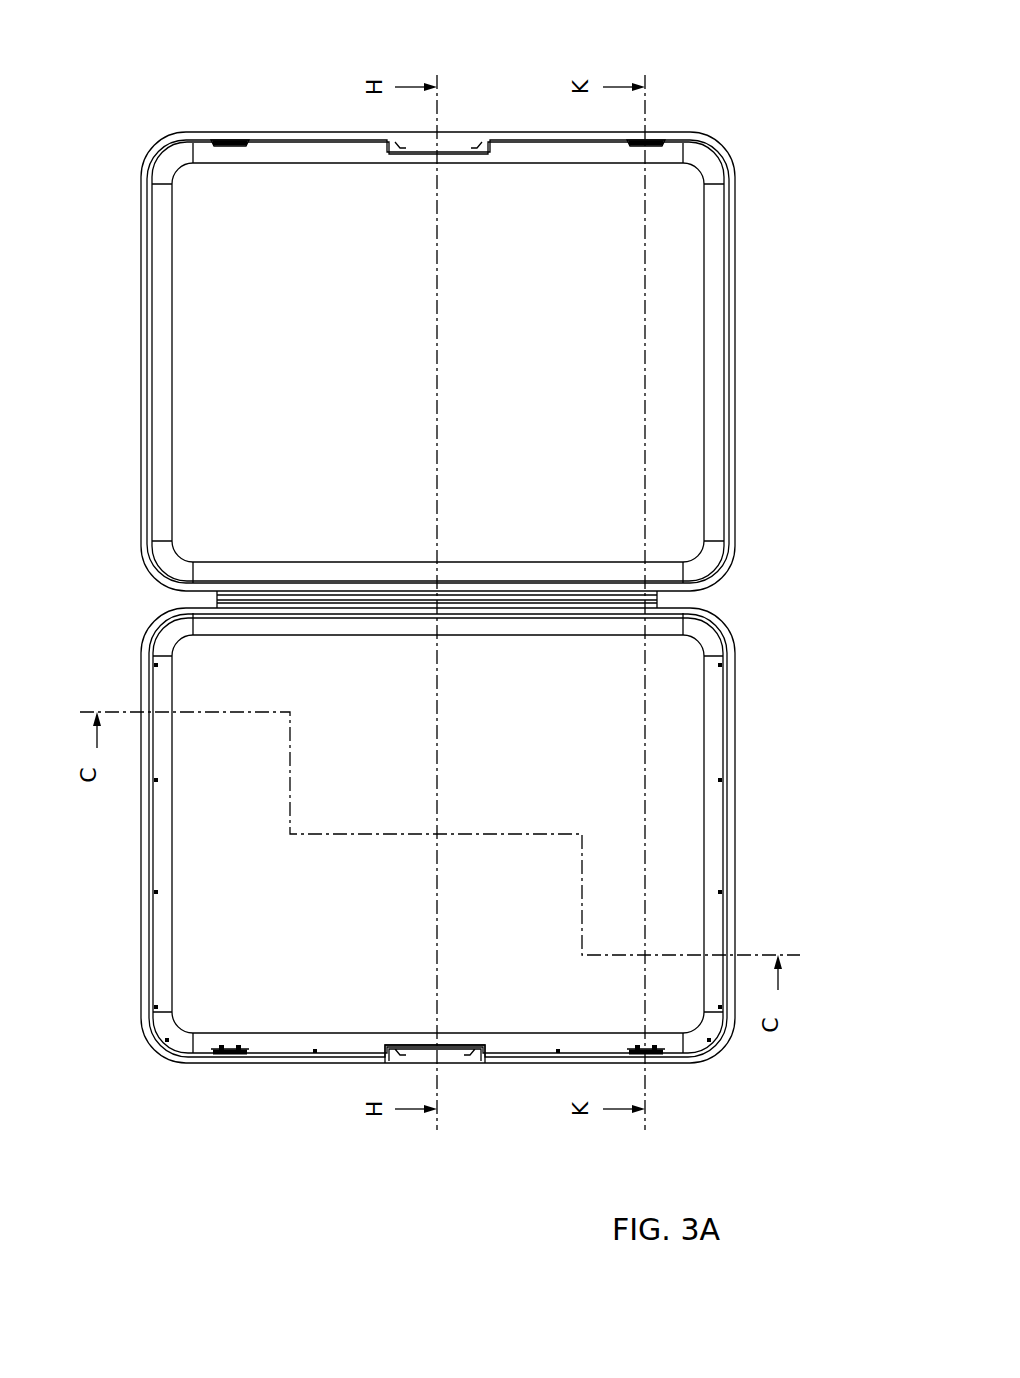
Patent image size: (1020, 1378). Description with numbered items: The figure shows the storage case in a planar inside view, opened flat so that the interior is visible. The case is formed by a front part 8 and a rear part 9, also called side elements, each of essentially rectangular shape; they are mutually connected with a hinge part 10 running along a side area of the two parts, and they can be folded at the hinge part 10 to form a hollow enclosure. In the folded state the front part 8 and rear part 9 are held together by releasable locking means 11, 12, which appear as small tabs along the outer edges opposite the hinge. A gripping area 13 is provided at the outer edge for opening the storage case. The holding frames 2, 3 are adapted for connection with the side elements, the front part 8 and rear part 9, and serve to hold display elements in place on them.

The holding frame 2 is at (430, 299).
The holding frame 3 is at (444, 909).
The front part 8 is at (548, 392).
The rear part 9 is at (548, 752).
The hinge part 10 is at (590, 595).
The releasable locking means 11 is at (224, 137).
The releasable locking means 12 is at (224, 1054).
The gripping area 13 is at (462, 1048).